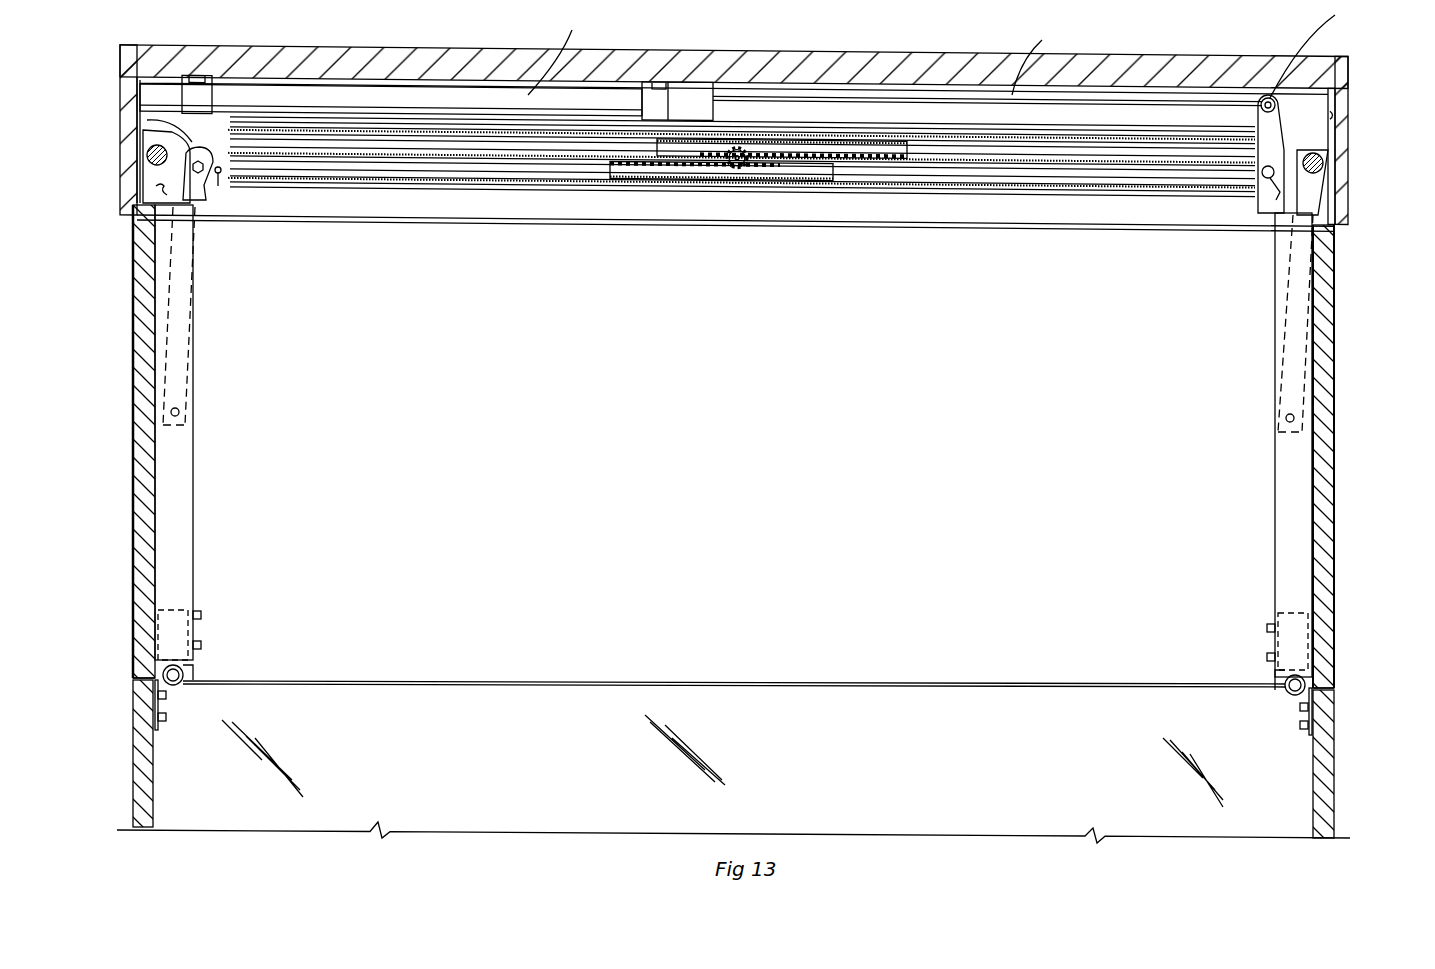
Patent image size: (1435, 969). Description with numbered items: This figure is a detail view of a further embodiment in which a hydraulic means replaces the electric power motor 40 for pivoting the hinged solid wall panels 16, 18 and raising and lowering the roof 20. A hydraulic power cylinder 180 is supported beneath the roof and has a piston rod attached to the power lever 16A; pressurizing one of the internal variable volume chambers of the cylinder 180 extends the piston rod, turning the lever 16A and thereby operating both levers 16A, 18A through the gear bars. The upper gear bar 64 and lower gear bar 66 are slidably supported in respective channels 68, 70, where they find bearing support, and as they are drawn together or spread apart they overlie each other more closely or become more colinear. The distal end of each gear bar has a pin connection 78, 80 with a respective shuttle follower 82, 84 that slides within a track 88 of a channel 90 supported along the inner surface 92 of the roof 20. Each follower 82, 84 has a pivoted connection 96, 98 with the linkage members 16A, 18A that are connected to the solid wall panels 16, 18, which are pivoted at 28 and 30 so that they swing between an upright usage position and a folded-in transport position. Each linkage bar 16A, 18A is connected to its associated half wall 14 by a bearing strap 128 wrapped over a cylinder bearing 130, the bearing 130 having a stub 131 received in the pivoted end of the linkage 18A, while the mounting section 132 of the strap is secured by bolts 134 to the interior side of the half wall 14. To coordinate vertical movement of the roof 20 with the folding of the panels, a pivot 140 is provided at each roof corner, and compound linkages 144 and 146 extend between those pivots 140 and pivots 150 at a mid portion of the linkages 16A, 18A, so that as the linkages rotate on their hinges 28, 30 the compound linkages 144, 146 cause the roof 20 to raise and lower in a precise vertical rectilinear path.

The roof 20 is at (652, 50).
The shuttle follower 84 is at (163, 122).
The power motor 40 is at (147, 160).
The compound linkage 146 is at (150, 192).
The pivoted connection 98 is at (218, 174).
The pin connection 80 is at (252, 195).
The track 88 is at (316, 130).
The channel 90 is at (345, 195).
The channel 70 is at (420, 185).
The channel 68 is at (430, 147).
The lower gear bar 66 is at (650, 178).
The hydraulic power cylinder 180 is at (738, 165).
The upper gear bar 64 is at (905, 145).
The shuttle follower 82 is at (1250, 170).
The pivoted connection 96 is at (1268, 200).
The pin connection 78 is at (1257, 130).
The inner surface 92 is at (1330, 110).
The pivot 140 is at (1322, 162).
The compound linkage 144 is at (1312, 200).
The solid wall panel 16 is at (1340, 302).
The solid wall panel 18 is at (134, 360).
The pivot 150 is at (182, 412).
The linkage member 18A is at (183, 487).
The linkage member 16A is at (1278, 488).
The stub 131 is at (180, 596).
The bearing strap 128 is at (155, 656).
The cylinder bearing 130 is at (188, 672).
The pivot 28 is at (190, 681).
The pivot 30 is at (1287, 692).
The mounting section 132 is at (150, 714).
The bolts 134 is at (168, 700).
The half wall 14 is at (132, 770).